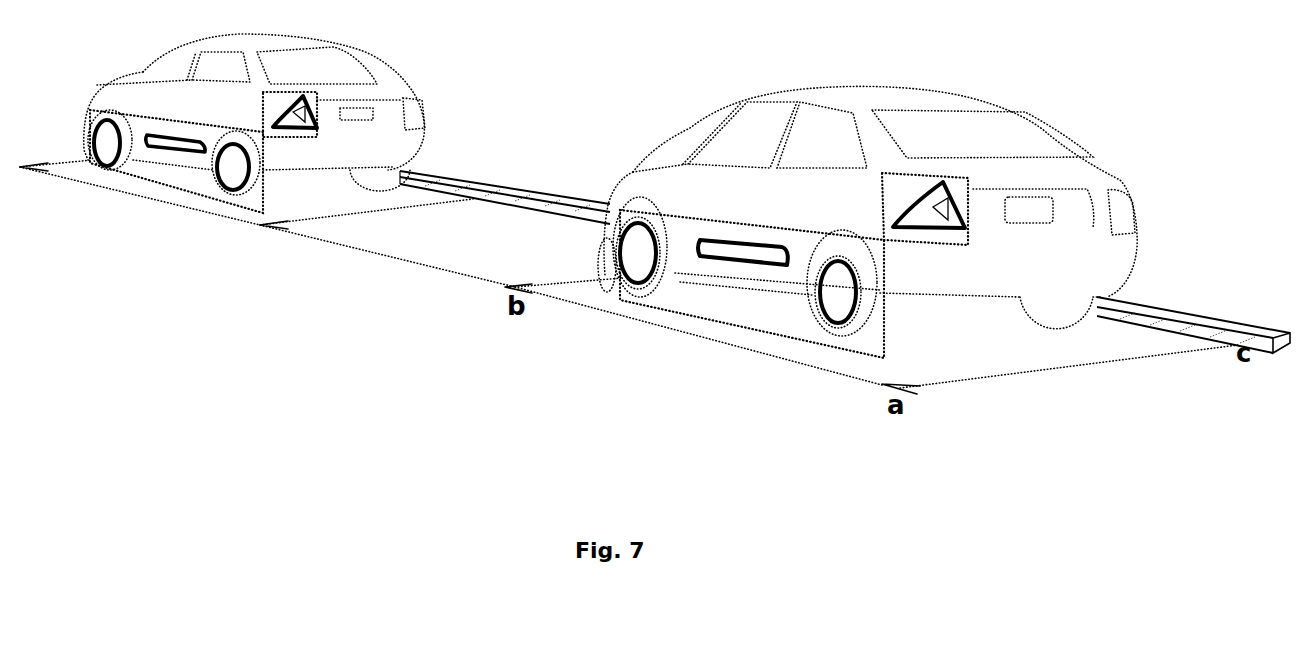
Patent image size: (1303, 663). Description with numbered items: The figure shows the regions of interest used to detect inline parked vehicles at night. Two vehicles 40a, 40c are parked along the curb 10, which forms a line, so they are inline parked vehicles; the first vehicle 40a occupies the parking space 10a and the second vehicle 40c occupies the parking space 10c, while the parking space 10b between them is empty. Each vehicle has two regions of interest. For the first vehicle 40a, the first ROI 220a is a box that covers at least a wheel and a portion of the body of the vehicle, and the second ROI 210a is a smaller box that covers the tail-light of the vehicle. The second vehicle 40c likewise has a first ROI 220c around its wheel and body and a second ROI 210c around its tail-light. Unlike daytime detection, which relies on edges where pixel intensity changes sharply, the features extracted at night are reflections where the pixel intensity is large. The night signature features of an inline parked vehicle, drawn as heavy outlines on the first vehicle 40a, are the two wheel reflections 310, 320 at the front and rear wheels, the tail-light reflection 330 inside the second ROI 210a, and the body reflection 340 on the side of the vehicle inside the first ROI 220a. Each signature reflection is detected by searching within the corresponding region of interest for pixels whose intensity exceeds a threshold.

The curb 10 is at (845, 262).
The parking space 10a is at (871, 336).
The parking space 10b is at (506, 258).
The parking space 10c is at (140, 192).
The vehicle 40a is at (1001, 154).
The vehicle 40c is at (342, 78).
The second ROI 210a is at (875, 209).
The second ROI 210c is at (250, 113).
The first ROI 220a is at (752, 264).
The first ROI 220c is at (176, 146).
The wheel reflection 310 is at (603, 253).
The wheel reflection 320 is at (877, 295).
The tail-light reflection 330 is at (957, 242).
The body reflection 340 is at (743, 278).